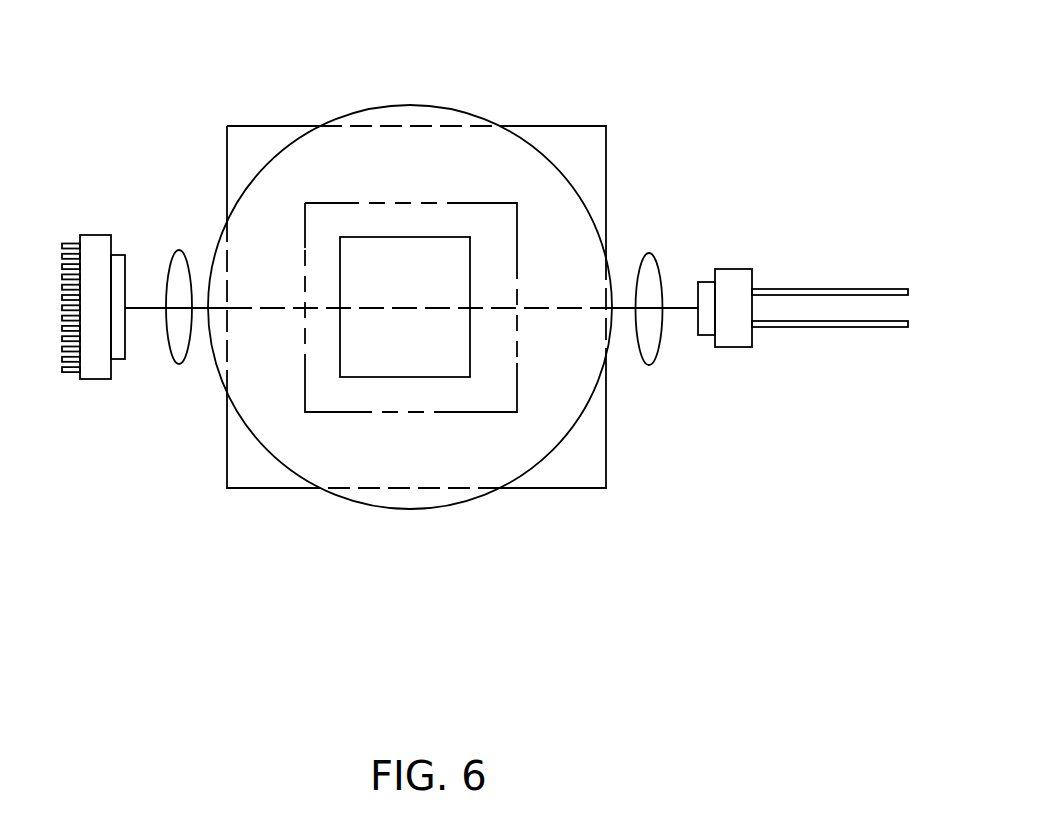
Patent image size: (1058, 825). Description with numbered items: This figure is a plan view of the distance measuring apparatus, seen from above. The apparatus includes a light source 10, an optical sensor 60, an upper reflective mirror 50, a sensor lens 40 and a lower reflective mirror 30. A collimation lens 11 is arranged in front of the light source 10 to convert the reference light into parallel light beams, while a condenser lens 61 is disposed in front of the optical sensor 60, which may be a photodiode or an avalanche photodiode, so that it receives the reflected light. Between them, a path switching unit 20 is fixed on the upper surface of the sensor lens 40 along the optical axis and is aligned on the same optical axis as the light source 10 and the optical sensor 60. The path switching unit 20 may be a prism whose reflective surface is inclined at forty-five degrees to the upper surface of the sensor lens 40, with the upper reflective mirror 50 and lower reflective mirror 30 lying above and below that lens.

The light source 10 is at (743, 268).
The collimation lens 11 is at (650, 253).
The path switching unit 20 is at (443, 238).
The lower reflective mirror 30 is at (247, 473).
The sensor lens 40 is at (408, 508).
The upper reflective mirror 50 is at (347, 202).
The optical sensor 60 is at (93, 245).
The condenser lens 61 is at (177, 252).